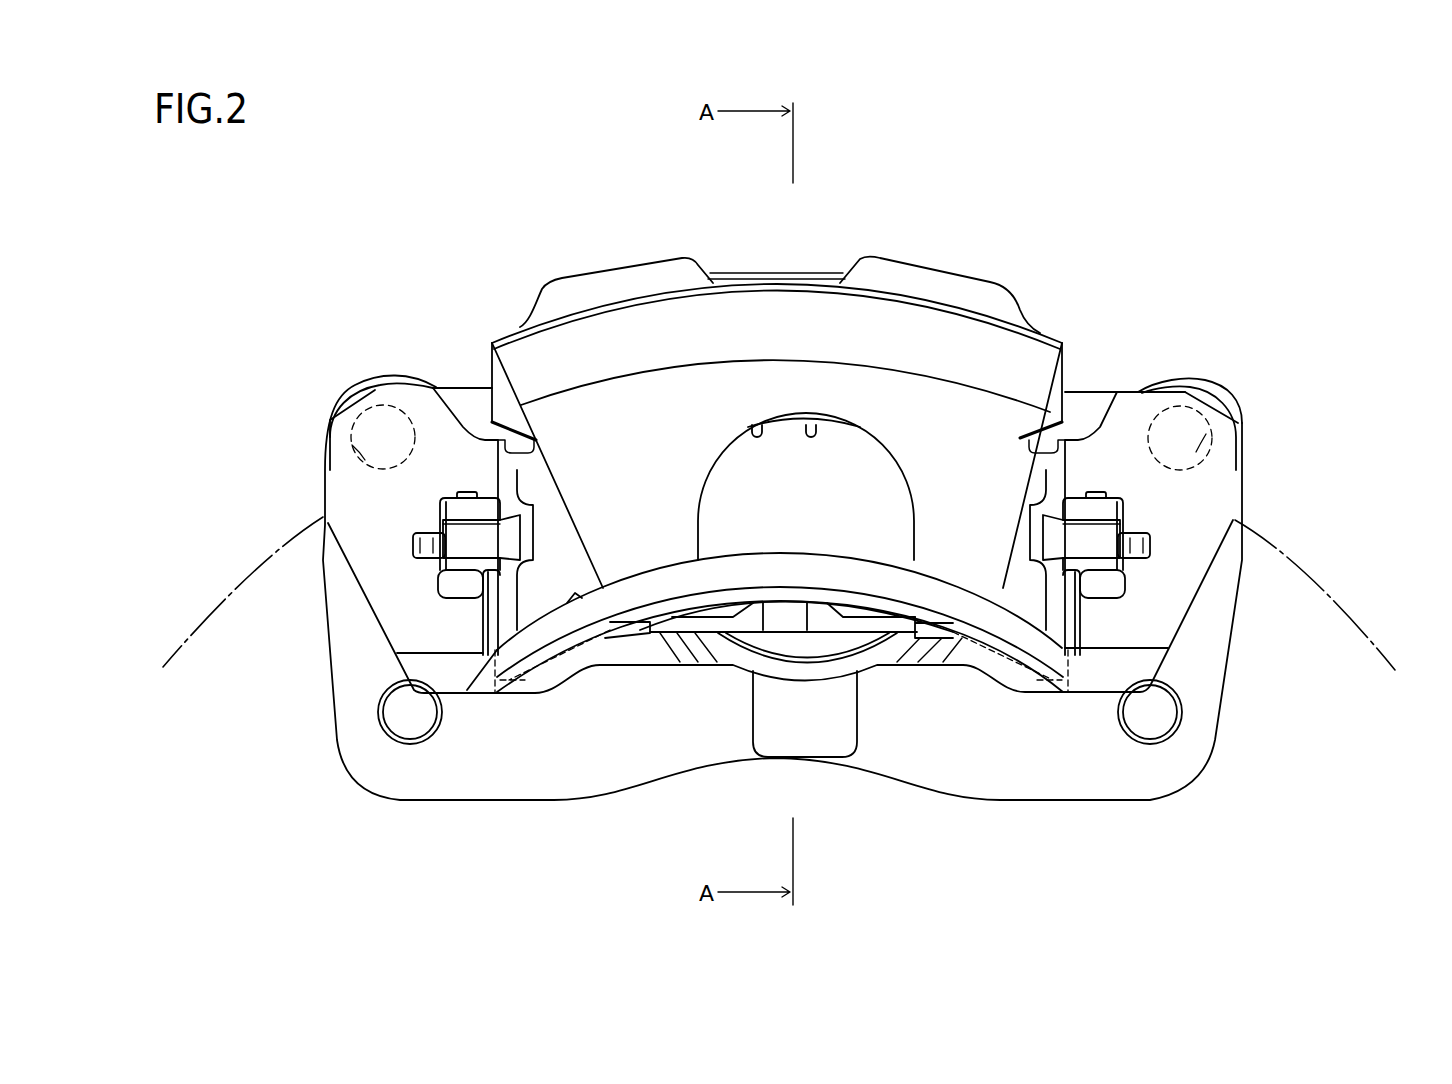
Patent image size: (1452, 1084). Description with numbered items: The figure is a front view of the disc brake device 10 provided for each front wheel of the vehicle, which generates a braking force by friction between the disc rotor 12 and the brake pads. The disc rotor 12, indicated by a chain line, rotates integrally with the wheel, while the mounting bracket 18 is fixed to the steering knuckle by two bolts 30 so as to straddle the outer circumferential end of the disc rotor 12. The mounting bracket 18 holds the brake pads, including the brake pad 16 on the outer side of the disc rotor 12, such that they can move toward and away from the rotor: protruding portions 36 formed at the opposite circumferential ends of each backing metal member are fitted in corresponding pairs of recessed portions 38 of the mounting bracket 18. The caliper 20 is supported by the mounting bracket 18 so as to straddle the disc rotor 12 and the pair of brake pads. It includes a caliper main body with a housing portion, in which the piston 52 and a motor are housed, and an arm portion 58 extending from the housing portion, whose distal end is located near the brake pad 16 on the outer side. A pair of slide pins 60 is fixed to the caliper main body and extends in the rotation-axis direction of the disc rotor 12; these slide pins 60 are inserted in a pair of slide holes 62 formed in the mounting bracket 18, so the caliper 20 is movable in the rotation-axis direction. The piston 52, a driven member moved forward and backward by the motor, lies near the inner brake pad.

The disc brake device 10 is at (1200, 172).
The disc rotor 12 is at (1325, 596).
The brake pad 16 is at (1070, 430).
The mounting bracket 18 is at (1090, 825).
The caliper 20 is at (1025, 272).
The bolts 30 is at (397, 712).
The protruding portions 36 is at (490, 503).
The recessed portions 38 is at (440, 510).
The piston 52 is at (803, 647).
The arm portion 58 is at (990, 407).
The slide pins 60 is at (385, 428).
The slide holes 62 is at (362, 449).